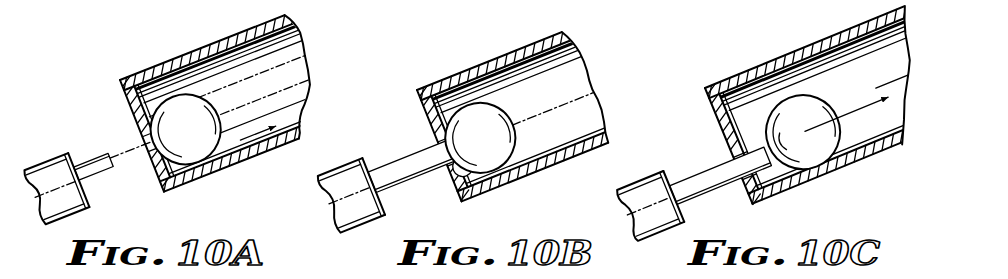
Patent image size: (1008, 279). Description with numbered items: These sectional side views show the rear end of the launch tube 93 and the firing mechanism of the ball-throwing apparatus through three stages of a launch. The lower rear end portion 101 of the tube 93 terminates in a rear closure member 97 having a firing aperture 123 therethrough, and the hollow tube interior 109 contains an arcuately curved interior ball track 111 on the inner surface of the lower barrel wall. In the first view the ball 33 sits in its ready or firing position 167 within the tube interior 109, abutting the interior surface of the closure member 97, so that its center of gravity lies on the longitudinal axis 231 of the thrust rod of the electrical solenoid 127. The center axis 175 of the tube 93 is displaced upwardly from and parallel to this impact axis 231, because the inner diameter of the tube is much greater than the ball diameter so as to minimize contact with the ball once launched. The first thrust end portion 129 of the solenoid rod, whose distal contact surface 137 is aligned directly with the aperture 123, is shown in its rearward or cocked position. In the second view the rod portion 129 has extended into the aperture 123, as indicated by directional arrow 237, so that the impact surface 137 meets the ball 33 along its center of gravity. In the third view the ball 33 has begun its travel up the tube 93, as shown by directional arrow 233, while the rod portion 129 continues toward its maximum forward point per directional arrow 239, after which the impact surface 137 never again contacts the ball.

In FIG. 10A, the launch tube 93 is at (252, 13).
In FIG. 10B, the launch tube 93 is at (546, 28).
In FIG. 10C, the launch tube 93 is at (863, 13).
In FIG. 10A, the lower rear end portion 101 is at (191, 52).
In FIG. 10B, the lower rear end portion 101 is at (452, 75).
In FIG. 10C, the lower rear end portion 101 is at (762, 67).
In FIG. 10A, the tube interior 109 is at (303, 52).
In FIG. 10B, the tube interior 109 is at (581, 62).
In FIG. 10C, the tube interior 109 is at (892, 63).
In FIG. 10A, the center axis of the tube 175 is at (307, 71).
In FIG. 10A, the interior ball track 111 is at (309, 97).
In FIG. 10A, the firing position 167 is at (222, 90).
In FIG. 10B, the firing position 167 is at (525, 118).
In FIG. 10A, the ball 33 is at (229, 82).
In FIG. 10B, the ball 33 is at (492, 143).
In FIG. 10C, the ball 33 is at (818, 110).
In FIG. 10A, the rear closure member 97 is at (161, 183).
In FIG. 10B, the rear closure member 97 is at (418, 102).
In FIG. 10C, the rear closure member 97 is at (710, 96).
In FIG. 10A, the firing aperture 123 is at (138, 142).
In FIG. 10B, the firing aperture 123 is at (437, 145).
In FIG. 10C, the firing aperture 123 is at (745, 188).
In FIG. 10A, the longitudinal axis 231 is at (135, 161).
In FIG. 10A, the contact surface 137 is at (108, 152).
In FIG. 10B, the contact surface 137 is at (470, 172).
In FIG. 10C, the contact surface 137 is at (777, 143).
In FIG. 10A, the first thrust end portion 129 is at (89, 196).
In FIG. 10B, the first thrust end portion 129 is at (415, 178).
In FIG. 10C, the first thrust end portion 129 is at (693, 193).
In FIG. 10A, the electrical solenoid 127 is at (62, 232).
In FIG. 10B, the electrical solenoid 127 is at (369, 222).
In FIG. 10C, the electrical solenoid 127 is at (668, 230).
In FIG. 10B, the directional arrow 237 is at (415, 145).
In FIG. 10C, the directional arrow 239 is at (715, 153).
In FIG. 10C, the directional arrow 233 is at (855, 108).